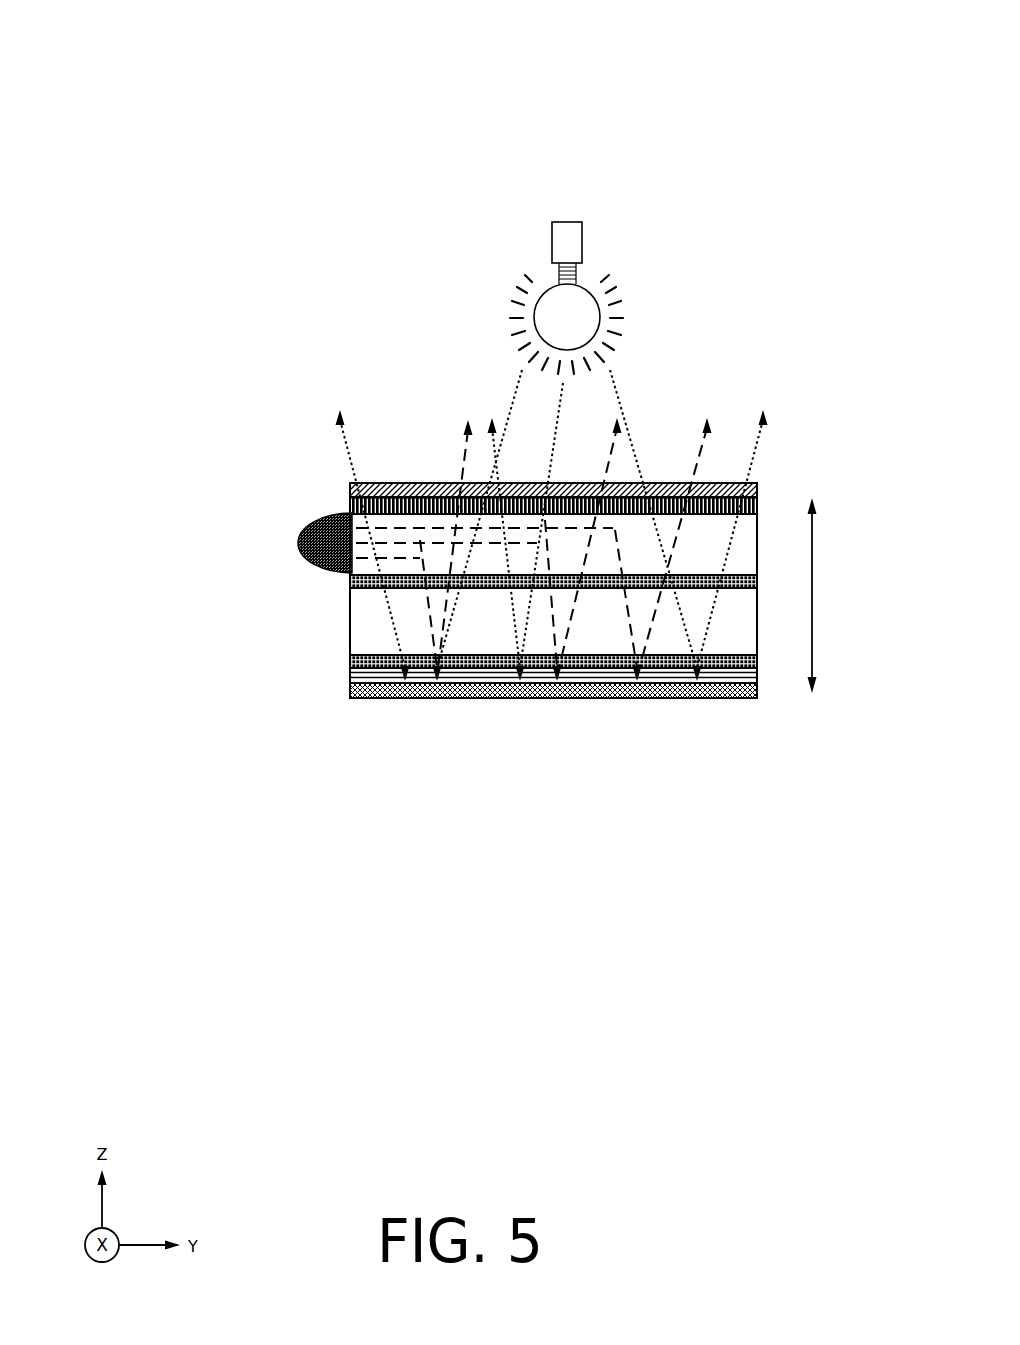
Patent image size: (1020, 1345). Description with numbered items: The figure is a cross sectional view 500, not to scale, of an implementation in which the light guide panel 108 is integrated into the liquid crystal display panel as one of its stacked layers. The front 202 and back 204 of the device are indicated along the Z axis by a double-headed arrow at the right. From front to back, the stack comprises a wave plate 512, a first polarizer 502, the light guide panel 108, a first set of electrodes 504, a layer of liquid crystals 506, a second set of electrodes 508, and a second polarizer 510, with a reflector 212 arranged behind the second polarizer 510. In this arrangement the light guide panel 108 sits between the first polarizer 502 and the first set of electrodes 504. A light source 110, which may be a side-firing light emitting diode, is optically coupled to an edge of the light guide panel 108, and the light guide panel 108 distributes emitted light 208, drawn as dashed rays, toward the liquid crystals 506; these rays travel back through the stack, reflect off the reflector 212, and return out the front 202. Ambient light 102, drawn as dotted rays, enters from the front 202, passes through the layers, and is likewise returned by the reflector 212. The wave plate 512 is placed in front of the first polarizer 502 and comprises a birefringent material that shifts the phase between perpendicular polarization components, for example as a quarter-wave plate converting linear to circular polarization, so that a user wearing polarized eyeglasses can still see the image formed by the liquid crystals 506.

The cross sectional view 500 is at (753, 52).
The ambient light 102 is at (507, 400).
The emitted light 208 is at (437, 527).
The first polarizer 502 is at (420, 498).
The wave plate 512 is at (658, 508).
The light guide panel 108 is at (635, 555).
The light source 110 is at (322, 530).
The first set of electrodes 504 is at (360, 580).
The liquid crystals 506 is at (363, 620).
The second set of electrodes 508 is at (360, 663).
The second polarizer 510 is at (470, 675).
The reflector 212 is at (481, 698).
The front 202 is at (811, 523).
The back 204 is at (812, 671).